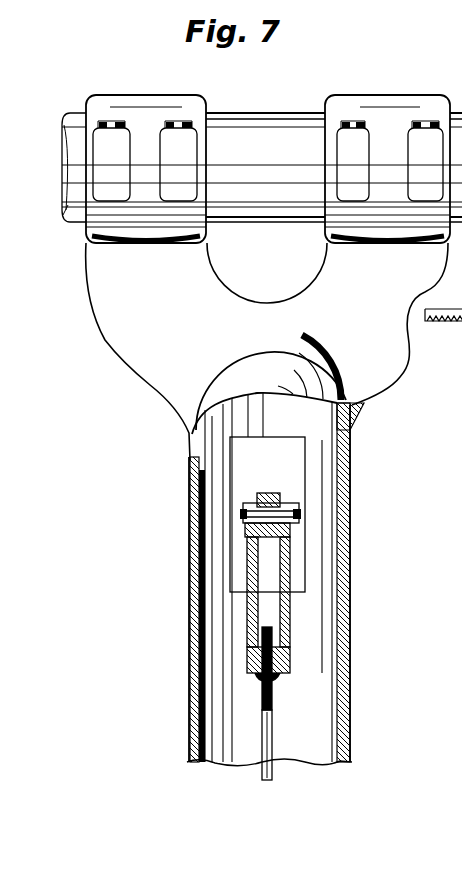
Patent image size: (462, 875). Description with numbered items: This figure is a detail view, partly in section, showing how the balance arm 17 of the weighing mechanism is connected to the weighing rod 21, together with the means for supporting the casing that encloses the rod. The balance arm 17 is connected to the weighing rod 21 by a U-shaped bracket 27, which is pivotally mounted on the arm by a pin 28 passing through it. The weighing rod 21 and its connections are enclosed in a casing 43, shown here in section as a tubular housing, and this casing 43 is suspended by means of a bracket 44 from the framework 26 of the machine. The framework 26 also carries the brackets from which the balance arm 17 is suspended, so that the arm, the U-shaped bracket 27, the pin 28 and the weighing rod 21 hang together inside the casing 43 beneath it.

The framework 26 is at (256, 88).
The bracket 44 is at (203, 284).
The casing 43 is at (349, 569).
The balance arm 17 is at (268, 492).
The pin 28 is at (240, 505).
The U-shaped bracket 27 is at (292, 621).
The weighing rod 21 is at (278, 732).